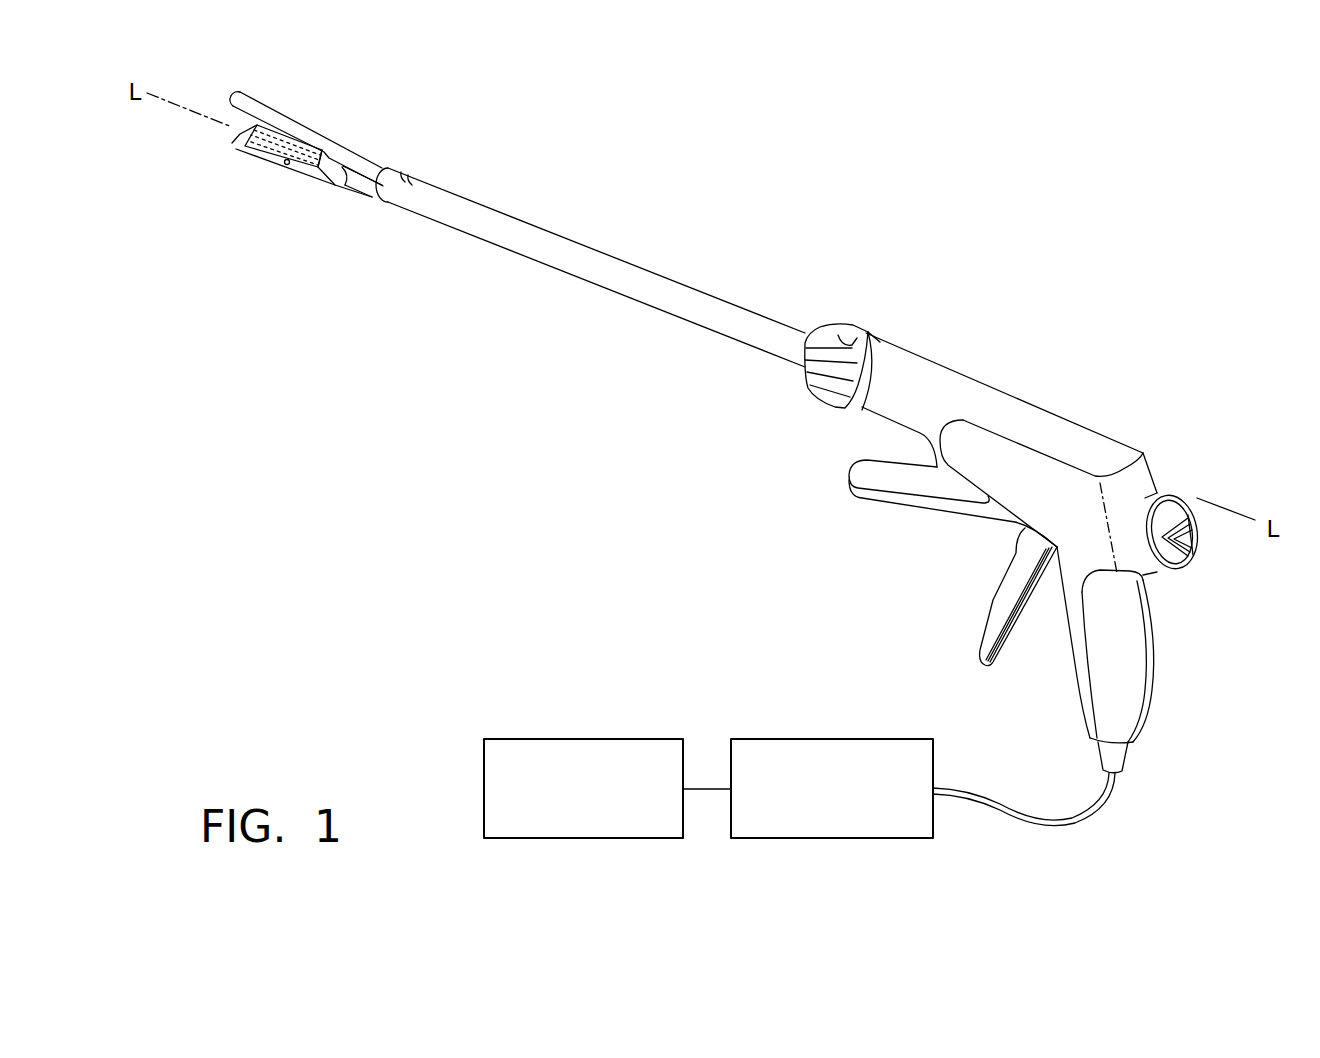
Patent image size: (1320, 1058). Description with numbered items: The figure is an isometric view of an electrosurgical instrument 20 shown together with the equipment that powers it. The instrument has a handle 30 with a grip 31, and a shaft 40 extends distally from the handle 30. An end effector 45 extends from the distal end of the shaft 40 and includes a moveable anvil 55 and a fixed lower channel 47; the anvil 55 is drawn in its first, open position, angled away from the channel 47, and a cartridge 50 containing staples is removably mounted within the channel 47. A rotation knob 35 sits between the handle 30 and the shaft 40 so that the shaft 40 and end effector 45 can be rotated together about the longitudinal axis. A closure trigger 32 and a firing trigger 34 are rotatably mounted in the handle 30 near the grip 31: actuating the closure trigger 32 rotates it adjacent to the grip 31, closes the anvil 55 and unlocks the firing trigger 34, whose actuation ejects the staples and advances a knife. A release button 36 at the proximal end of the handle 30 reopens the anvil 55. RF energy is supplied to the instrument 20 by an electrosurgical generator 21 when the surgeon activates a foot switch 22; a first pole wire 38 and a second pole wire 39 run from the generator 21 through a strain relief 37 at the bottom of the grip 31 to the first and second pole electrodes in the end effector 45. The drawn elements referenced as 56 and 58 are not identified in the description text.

The electrosurgical instrument 20 is at (508, 406).
The electrosurgical generator 21 is at (833, 738).
The foot switch 22 is at (585, 738).
The handle 30 is at (993, 380).
The grip 31 is at (1135, 688).
The closure trigger 32 is at (992, 604).
The firing trigger 34 is at (930, 513).
The rotation knob 35 is at (841, 323).
The release button 36 is at (1187, 490).
The strain relief 37 is at (1117, 757).
The first pole wire 38 is at (1107, 803).
The second pole wire 39 is at (1076, 812).
The shaft 40 is at (605, 253).
The end effector 45 is at (214, 132).
The channel 47 is at (271, 176).
The cartridge 50 is at (233, 152).
The anvil 55 is at (316, 105).
The upper jaw 56 is at (262, 95).
The jaw sealing surface 58 is at (236, 110).